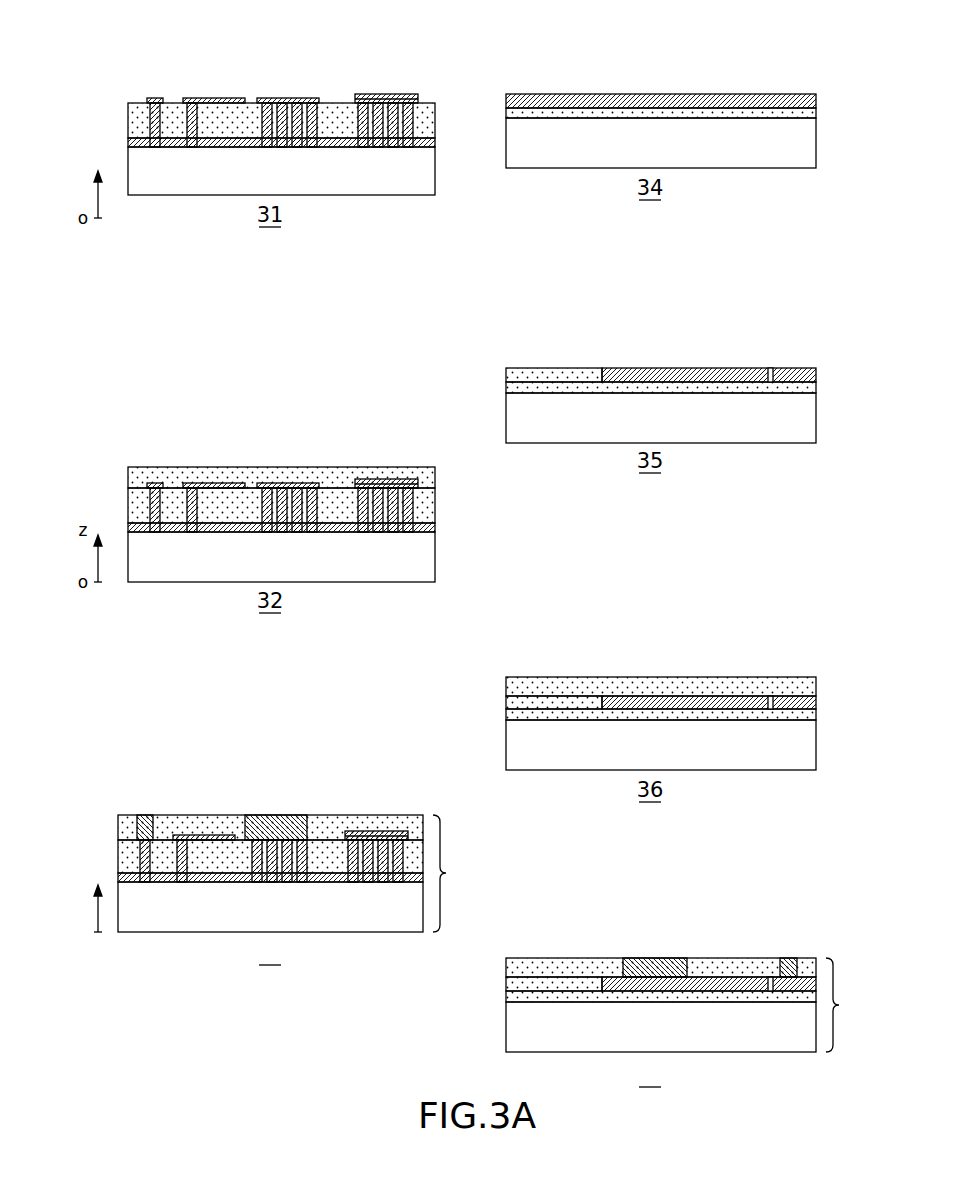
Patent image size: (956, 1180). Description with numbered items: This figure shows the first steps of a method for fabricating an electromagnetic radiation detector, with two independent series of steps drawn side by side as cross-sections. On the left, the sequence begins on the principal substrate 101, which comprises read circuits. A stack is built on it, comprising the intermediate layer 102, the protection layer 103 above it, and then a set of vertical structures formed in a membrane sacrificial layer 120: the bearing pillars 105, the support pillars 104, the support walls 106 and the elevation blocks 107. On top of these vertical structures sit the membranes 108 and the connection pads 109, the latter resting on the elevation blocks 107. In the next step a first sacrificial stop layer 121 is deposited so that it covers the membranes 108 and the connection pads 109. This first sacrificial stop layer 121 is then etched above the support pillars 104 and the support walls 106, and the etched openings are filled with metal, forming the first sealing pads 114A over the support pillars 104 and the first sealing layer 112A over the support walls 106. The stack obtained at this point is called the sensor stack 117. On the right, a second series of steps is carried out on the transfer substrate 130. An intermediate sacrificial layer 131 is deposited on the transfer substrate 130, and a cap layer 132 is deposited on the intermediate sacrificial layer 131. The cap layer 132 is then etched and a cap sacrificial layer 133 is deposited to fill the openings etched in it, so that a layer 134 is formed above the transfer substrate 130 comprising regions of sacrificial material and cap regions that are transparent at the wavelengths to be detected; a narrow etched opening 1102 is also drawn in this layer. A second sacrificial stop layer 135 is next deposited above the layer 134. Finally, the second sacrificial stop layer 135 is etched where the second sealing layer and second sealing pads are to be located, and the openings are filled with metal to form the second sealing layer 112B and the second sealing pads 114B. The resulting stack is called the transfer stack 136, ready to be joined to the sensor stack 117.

The principal substrate 101 is at (408, 185).
The intermediate layer 102 is at (437, 143).
The protection layer 103 is at (127, 139).
The support pillars 104 is at (148, 120).
The bearing pillars 105 is at (178, 112).
The support walls 106 is at (285, 88).
The elevation blocks 107 is at (361, 78).
The membranes 108 is at (217, 98).
The connection pads 109 is at (388, 96).
The membrane sacrificial layer 120 is at (428, 110).
The first sacrificial stop layer 121 is at (138, 483).
The first sealing layer 112A is at (275, 815).
The first sealing pads 114A is at (145, 815).
The sensor stack 117 is at (281, 866).
The transfer substrate 130 is at (810, 148).
The intermediate sacrificial layer 131 is at (810, 113).
The cap layer 132 is at (810, 103).
The cap sacrificial layer 133 is at (560, 368).
The layer comprising sacrificial regions and cap regions 134 is at (819, 382).
The opening 1102 is at (770, 368).
The second sacrificial stop layer 135 is at (809, 684).
The second sealing layer 112B is at (650, 958).
The second sealing pads 114B is at (790, 958).
The transfer stack 136 is at (692, 995).